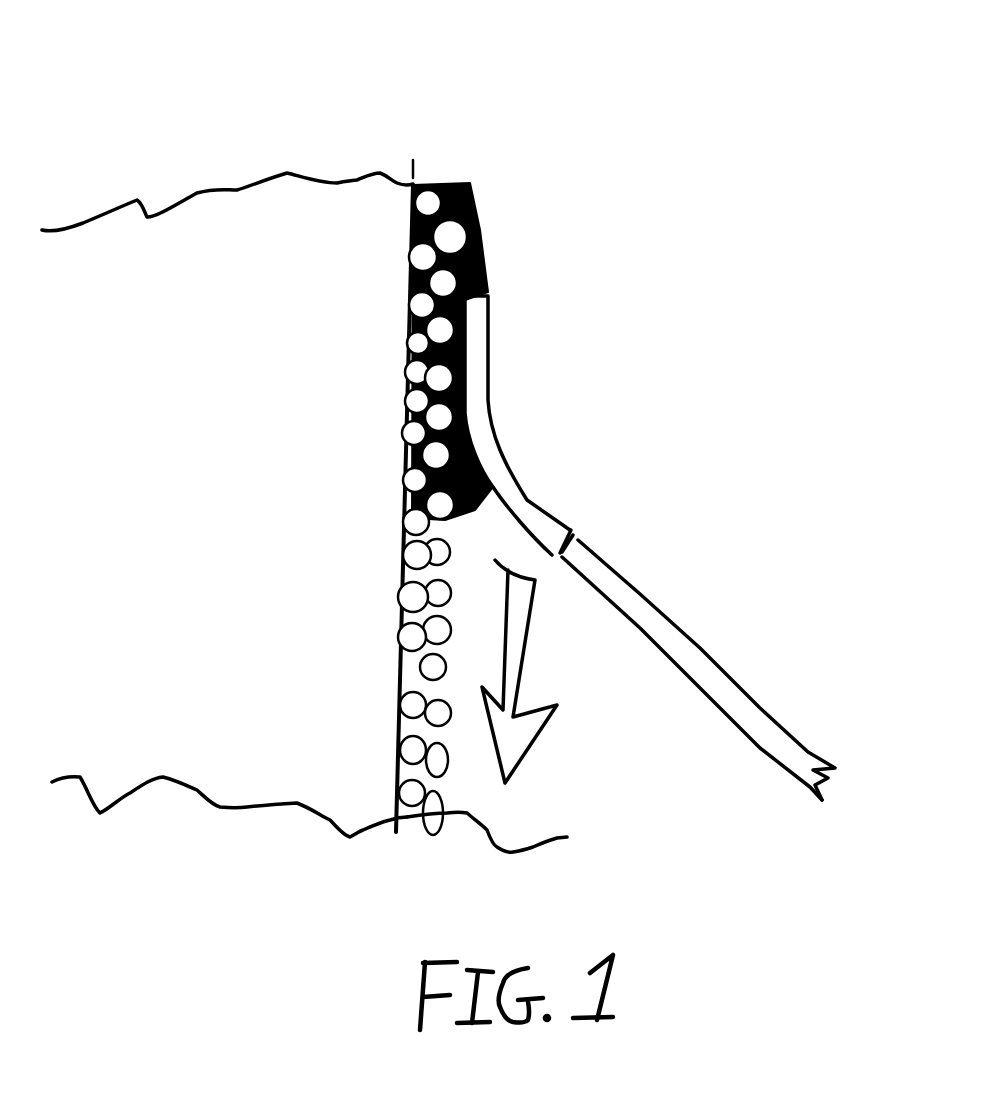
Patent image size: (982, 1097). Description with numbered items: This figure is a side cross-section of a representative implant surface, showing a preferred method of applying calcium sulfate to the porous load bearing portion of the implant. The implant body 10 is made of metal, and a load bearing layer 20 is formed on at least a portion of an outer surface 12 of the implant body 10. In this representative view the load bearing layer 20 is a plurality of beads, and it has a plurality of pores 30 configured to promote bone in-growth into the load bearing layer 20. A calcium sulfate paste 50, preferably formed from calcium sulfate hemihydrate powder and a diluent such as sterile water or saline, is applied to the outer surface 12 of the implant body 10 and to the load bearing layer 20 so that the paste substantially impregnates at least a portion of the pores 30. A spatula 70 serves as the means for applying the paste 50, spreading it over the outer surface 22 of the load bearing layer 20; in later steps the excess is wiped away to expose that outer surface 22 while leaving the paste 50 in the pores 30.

The implant body 10 is at (262, 240).
The outer surface 12 is at (412, 236).
The calcium sulfate paste 50 is at (461, 192).
The pores 30 is at (430, 673).
The spatula 70 is at (580, 550).
The load bearing layer 20 is at (400, 858).
The outer surface of the load bearing layer 22 is at (667, 842).